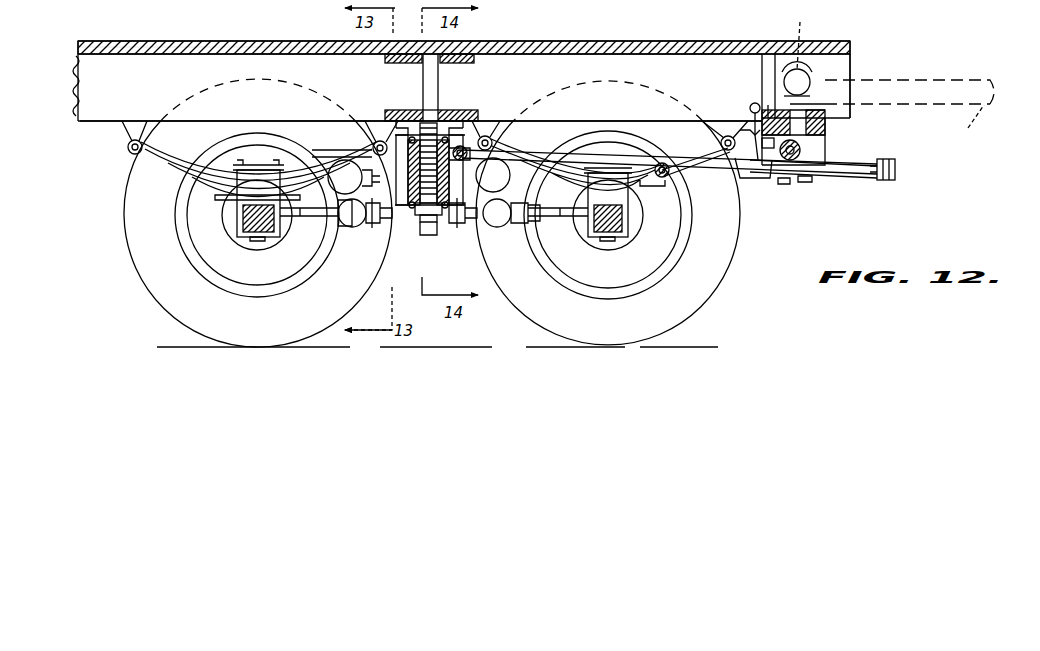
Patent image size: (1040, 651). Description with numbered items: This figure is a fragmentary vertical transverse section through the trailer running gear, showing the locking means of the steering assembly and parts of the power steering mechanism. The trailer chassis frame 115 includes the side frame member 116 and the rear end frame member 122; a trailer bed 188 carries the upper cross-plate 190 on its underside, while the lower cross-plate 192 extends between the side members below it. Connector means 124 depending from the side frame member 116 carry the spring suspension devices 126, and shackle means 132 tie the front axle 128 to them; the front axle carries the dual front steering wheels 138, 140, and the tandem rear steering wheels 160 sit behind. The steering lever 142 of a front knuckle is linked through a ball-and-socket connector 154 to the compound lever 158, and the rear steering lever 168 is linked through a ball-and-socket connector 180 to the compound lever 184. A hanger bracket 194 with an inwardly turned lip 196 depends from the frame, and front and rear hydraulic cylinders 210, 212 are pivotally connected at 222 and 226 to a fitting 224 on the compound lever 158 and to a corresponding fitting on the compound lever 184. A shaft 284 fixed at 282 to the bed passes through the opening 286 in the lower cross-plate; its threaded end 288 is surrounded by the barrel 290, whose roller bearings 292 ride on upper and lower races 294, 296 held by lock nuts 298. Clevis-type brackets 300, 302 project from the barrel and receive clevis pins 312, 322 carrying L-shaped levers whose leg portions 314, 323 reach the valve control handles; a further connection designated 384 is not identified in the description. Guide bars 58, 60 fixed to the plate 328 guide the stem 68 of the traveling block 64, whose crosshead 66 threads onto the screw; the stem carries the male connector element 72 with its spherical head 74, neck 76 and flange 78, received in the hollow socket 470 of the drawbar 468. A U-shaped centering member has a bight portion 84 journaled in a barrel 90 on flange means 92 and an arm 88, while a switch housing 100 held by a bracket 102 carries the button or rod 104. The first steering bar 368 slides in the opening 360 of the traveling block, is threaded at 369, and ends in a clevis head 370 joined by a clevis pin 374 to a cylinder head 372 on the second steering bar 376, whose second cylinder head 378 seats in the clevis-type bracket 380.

The trailer chassis frame 115 is at (76, 112).
The trailer chassis side frame member 116 is at (76, 82).
The front steering wheels 140 is at (226, 0).
The trailer bed 188 is at (522, 40).
The connector means 124 is at (128, 150).
The spring suspension devices 126 is at (175, 184).
The front axle 128 is at (250, 228).
The shackle means 132 is at (232, 225).
The front steering wheels 138 is at (138, 305).
The steering lever 142 is at (296, 218).
The ball-and-socket connector 154 is at (338, 208).
The compound lever 158 is at (336, 240).
The rear steering wheels 160 is at (712, 303).
The steering lever 168 is at (556, 222).
The ball-and-socket connector 180 is at (535, 207).
The compound lever 184 is at (538, 250).
The upper cross-plate 190 is at (474, 60).
The lower cross-plate 192 is at (422, 110).
The hanger bracket 194 is at (462, 128).
The lip 196 is at (360, 150).
The front hydraulic cylinder 210 is at (368, 190).
The rear hydraulic cylinder 212 is at (535, 160).
The pivotal connection 222 is at (356, 228).
The fitting 224 is at (364, 238).
The pivotal connection 226 is at (518, 232).
The fixed connection 282 is at (440, 100).
The shaft 284 is at (424, 98).
The opening 286 is at (452, 130).
The threaded end 288 is at (437, 220).
The barrel 290 is at (385, 140).
The anti-friction roller bearings 292 is at (465, 135).
The upper race 294 is at (396, 128).
The lower race 296 is at (445, 232).
The lock nuts 298 is at (410, 132).
The clevis-type bracket 300 is at (318, 152).
The clevis-type bracket 302 is at (500, 227).
The clevis pin 312 is at (358, 140).
The leg portion 314 is at (362, 180).
The clevis pin 322 is at (504, 242).
The leg portion 323 is at (481, 163).
The plate 328 is at (828, 165).
The opening 360 is at (805, 180).
The first steering bar 368 is at (708, 210).
The threaded end 369 is at (872, 183).
The clevis head 370 is at (665, 163).
The cylinder head 372 is at (652, 160).
The clevis pin 374 is at (660, 187).
The second steering bar 376 is at (620, 166).
The second cylinder head 378 is at (490, 130).
The clevis-type bracket 380 is at (472, 140).
The bar pivot pin 384 is at (468, 158).
The drawbar 468 is at (968, 125).
The rear end frame member 122 is at (848, 70).
The guide bar 58 is at (752, 120).
The guide bar 60 is at (826, 131).
The traveling block 64 is at (783, 186).
The crosshead 66 is at (805, 183).
The stem 68 is at (826, 116).
The male connector element 72 is at (805, 76).
The spherical head 74 is at (792, 73).
The neck 76 is at (812, 108).
The flange 78 is at (818, 112).
The bight portion 84 is at (756, 103).
The arm 88 is at (769, 105).
The barrel 90 is at (750, 103).
The flange means 92 is at (735, 180).
The housing 100 is at (770, 172).
The bracket 102 is at (756, 175).
The button or rod 104 is at (803, 148).
The hollow socket 470 is at (815, 38).